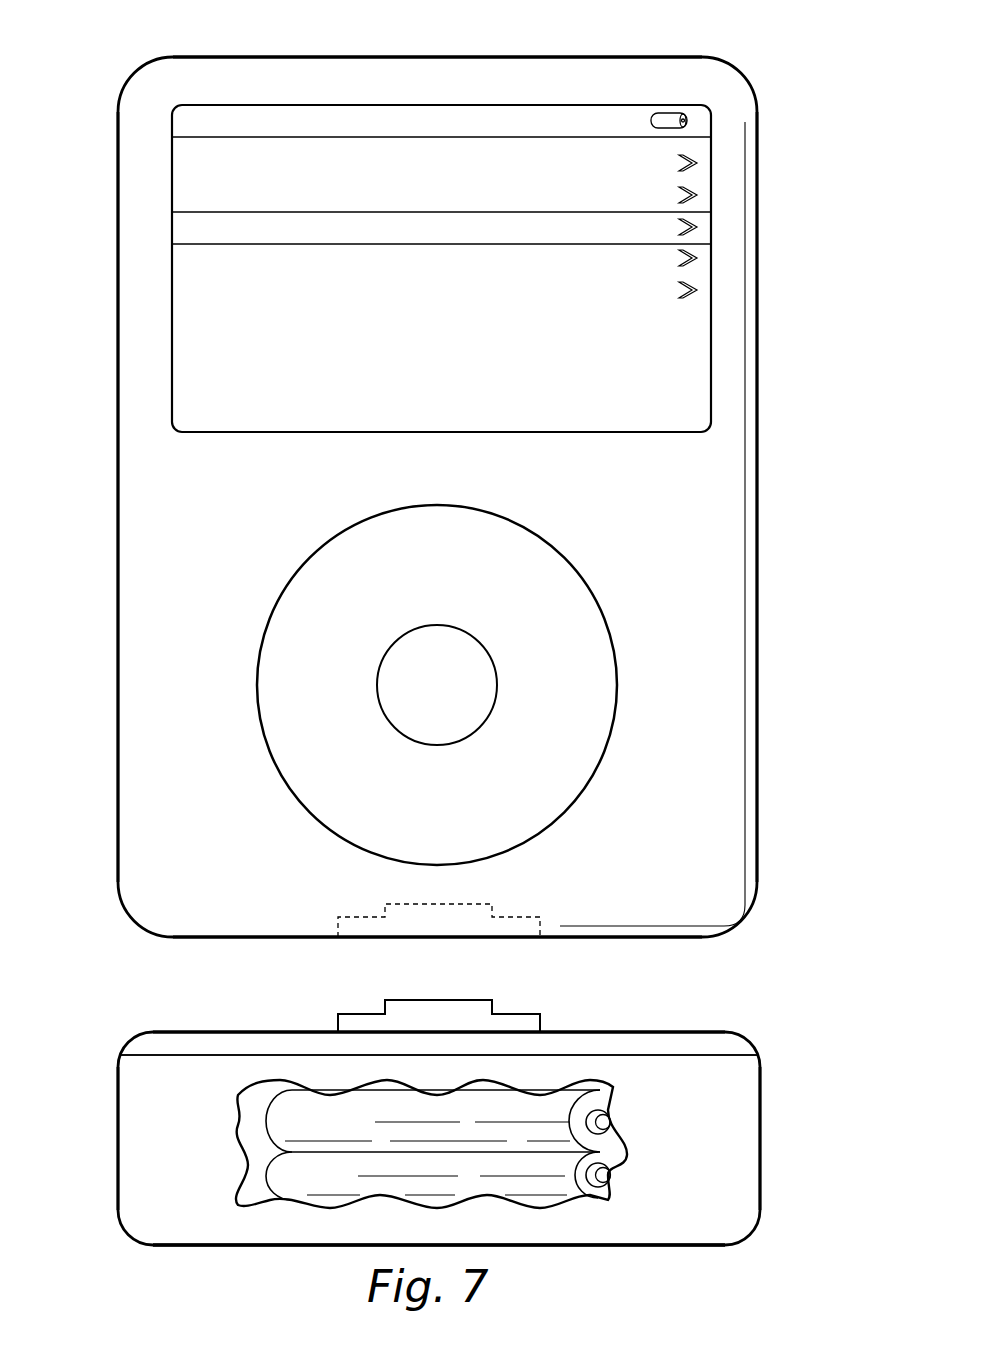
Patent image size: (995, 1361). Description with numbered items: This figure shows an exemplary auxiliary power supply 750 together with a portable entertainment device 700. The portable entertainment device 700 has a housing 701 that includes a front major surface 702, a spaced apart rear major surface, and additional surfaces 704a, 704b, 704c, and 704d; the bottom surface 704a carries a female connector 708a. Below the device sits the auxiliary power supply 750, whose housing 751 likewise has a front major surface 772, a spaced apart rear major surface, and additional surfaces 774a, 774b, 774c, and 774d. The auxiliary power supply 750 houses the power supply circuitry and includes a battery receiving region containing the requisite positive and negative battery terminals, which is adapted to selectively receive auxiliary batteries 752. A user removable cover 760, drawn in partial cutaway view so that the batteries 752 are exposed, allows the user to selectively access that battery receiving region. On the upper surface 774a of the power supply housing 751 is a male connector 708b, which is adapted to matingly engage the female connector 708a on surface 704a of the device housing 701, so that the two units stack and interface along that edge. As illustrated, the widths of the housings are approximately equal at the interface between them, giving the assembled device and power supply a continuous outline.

The portable entertainment device 700 is at (449, 507).
The housing 701 is at (730, 88).
The front major surface 702 is at (168, 592).
The surface 704a is at (662, 937).
The surface 704b is at (118, 480).
The surface 704c is at (315, 55).
The surface 704d is at (760, 492).
The female connector 708a is at (438, 940).
The male connector 708b is at (508, 1013).
The auxiliary power supply 750 is at (450, 1139).
The housing 751 is at (748, 1099).
The auxiliary batteries 752 is at (337, 1187).
The user removable cover 760 is at (180, 1193).
The front major surface 772 is at (702, 1207).
The surface 774a is at (172, 1032).
The surface 774b is at (760, 1133).
The surface 774c is at (627, 1245).
The surface 774d is at (118, 1150).